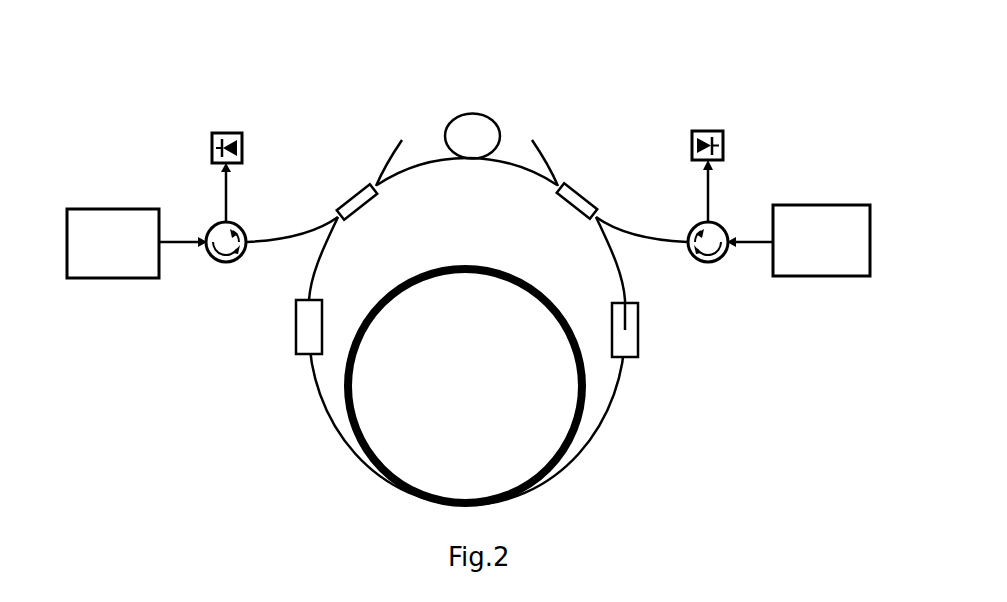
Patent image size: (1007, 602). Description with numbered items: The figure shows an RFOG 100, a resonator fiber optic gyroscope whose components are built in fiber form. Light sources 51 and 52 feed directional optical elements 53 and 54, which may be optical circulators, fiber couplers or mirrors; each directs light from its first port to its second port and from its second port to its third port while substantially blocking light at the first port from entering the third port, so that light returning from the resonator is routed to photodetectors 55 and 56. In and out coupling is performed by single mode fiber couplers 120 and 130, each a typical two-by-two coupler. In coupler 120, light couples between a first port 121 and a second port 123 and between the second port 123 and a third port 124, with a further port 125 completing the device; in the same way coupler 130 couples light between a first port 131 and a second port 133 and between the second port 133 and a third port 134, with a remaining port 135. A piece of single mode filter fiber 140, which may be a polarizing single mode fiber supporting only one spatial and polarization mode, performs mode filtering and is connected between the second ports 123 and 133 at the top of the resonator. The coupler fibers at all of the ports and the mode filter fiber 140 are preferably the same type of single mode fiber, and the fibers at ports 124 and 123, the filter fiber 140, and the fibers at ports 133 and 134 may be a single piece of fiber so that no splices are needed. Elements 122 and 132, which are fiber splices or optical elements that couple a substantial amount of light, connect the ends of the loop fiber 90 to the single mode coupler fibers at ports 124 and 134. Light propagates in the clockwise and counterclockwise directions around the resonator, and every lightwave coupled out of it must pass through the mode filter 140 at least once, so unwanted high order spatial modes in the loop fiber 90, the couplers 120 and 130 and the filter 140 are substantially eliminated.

The RFOG 100 is at (667, 80).
The light source 51 is at (123, 209).
The light source 52 is at (833, 205).
The directional optical element 53 is at (217, 266).
The directional optical element 54 is at (707, 264).
The photodetector 55 is at (212, 138).
The photodetector 56 is at (723, 135).
The fiber loop 90 is at (522, 288).
The single mode fiber coupler 120 is at (357, 192).
The first port 121 is at (330, 213).
The element (fiber splice) 122 is at (296, 322).
The second port 123 is at (387, 182).
The third port 124 is at (342, 222).
The coupler port 125 is at (380, 172).
The single mode fiber coupler 130 is at (580, 188).
The first port 131 is at (602, 213).
The element (fiber splice) 132 is at (638, 327).
The second port 133 is at (545, 183).
The third port 134 is at (598, 222).
The coupler port 135 is at (548, 162).
The single mode filter fiber 140 is at (470, 113).